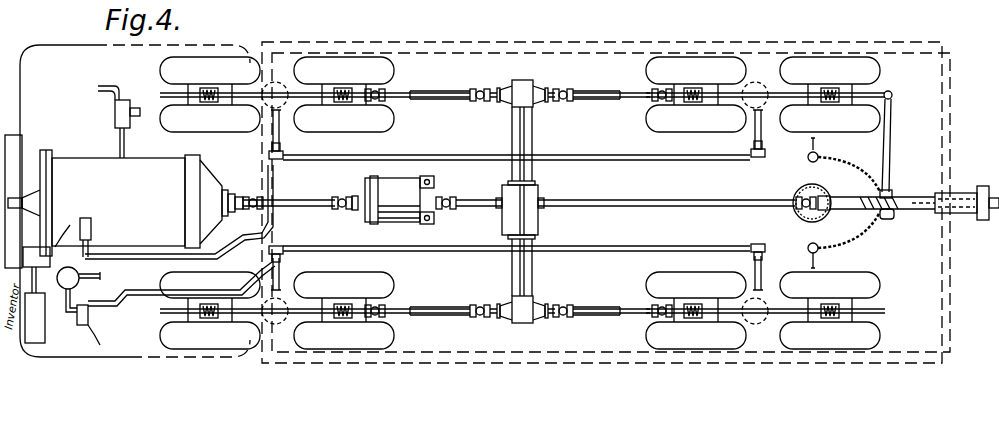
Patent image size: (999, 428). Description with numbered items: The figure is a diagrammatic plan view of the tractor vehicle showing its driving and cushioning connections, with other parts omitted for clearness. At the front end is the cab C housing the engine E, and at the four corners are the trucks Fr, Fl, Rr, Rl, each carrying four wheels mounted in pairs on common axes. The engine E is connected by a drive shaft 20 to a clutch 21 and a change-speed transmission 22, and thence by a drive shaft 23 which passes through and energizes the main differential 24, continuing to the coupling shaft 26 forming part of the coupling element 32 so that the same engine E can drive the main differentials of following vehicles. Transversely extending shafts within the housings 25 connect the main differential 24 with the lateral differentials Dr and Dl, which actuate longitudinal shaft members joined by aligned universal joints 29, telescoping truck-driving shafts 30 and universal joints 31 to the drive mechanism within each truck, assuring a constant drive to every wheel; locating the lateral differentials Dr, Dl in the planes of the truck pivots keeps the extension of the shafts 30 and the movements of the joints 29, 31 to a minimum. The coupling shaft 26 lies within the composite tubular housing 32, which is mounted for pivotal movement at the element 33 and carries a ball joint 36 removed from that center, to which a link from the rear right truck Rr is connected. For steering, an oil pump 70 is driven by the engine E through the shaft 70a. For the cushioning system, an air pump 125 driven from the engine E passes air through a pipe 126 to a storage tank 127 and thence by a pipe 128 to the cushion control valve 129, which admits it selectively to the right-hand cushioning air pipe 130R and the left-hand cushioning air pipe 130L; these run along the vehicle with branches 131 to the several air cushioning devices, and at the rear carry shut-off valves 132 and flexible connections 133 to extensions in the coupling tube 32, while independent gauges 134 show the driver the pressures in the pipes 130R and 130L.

The cab C is at (40, 58).
The engine E is at (107, 170).
The front right truck Fr is at (282, 80).
The front left truck Fl is at (285, 325).
The rear right truck Rr is at (756, 80).
The rear left truck Rl is at (762, 325).
The right lateral differential Dr is at (522, 84).
The left lateral differential Dl is at (520, 325).
The oil pump 70 is at (115, 110).
The oil pump shaft 70a is at (128, 140).
The drive shaft 20 is at (290, 199).
The clutch 21 is at (368, 187).
The change-speed transmission 22 is at (392, 192).
The drive shaft 23 is at (464, 199).
The main differential 24 is at (538, 193).
The transverse shaft housing 25 is at (534, 270).
The coupling shaft 26 is at (532, 118).
The universal joint 29 is at (482, 88).
The telescoping truck-driving shaft 30 is at (440, 96).
The universal joint 31 is at (392, 92).
The coupling element 32 is at (955, 193).
The pivot element 33 is at (796, 214).
The ball joint 36 is at (893, 132).
The air pump 125 is at (30, 247).
The pipe 126 is at (58, 280).
The storage tank 127 is at (42, 330).
The pipe 128 is at (102, 342).
The cushion control valve 129 is at (58, 247).
The right-hand cushioning air pipe 130R is at (140, 254).
The left-hand cushioning air pipe 130L is at (140, 292).
The branch 131 is at (281, 136).
The shut-off valve 132 is at (820, 156).
The flexible connection 133 is at (850, 172).
The gauge 134 is at (92, 226).